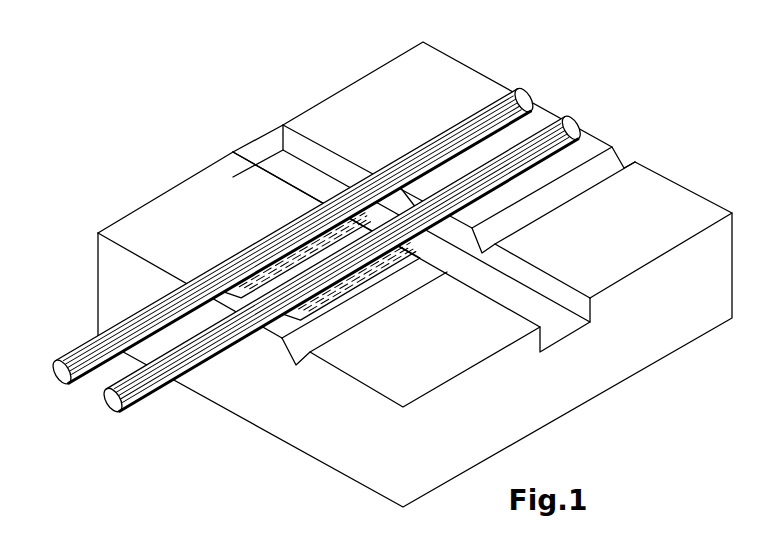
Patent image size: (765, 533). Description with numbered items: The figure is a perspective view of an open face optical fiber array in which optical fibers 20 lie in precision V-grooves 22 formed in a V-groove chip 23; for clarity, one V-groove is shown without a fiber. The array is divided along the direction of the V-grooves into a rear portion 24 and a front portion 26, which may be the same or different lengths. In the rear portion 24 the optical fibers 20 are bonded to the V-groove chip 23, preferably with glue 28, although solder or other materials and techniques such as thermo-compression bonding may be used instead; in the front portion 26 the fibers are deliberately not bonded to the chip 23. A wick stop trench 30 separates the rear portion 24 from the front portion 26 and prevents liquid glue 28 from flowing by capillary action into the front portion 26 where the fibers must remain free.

The optical fibers 20 is at (76, 386).
The precision V-grooves 22 is at (256, 325).
The V-groove chip 23 is at (463, 424).
The rear portion 24 is at (233, 152).
The front portion 26 is at (283, 125).
The glue 28 is at (350, 306).
The wick stop trench 30 is at (283, 125).